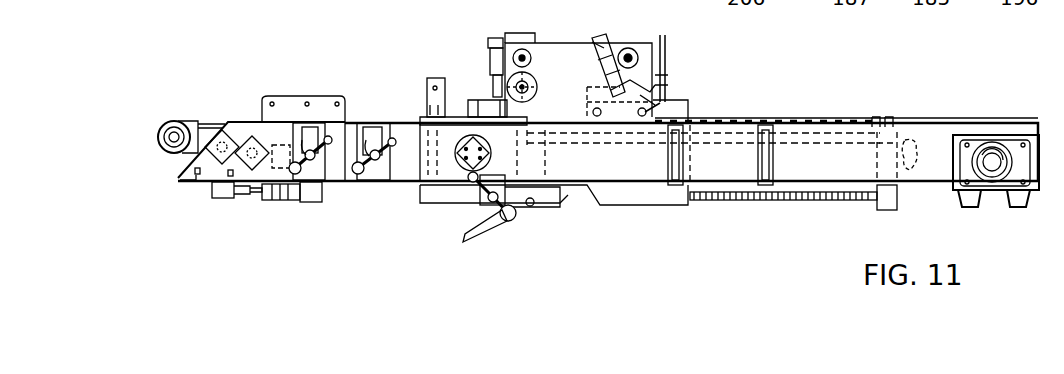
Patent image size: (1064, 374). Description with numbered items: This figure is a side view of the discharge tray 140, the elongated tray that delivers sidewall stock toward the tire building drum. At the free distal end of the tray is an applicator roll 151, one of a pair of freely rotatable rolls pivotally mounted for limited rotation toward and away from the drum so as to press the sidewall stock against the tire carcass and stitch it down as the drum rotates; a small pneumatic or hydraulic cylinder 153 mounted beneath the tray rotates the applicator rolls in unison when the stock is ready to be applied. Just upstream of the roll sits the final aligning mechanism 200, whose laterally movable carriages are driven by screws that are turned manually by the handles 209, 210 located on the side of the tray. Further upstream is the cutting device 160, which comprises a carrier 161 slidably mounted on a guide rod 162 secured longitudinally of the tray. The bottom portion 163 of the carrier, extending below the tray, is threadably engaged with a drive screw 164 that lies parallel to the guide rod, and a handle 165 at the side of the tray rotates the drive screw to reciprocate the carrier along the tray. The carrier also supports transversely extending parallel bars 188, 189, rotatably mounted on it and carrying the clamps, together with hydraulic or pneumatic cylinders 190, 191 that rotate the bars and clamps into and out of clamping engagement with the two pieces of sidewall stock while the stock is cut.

The discharge tray 140 is at (906, 113).
The applicator roll 151 is at (158, 135).
The pneumatic or hydraulic cylinder 153 is at (268, 202).
The cutting device 160 is at (652, 33).
The carrier 161 is at (556, 42).
The guide rod 162 is at (795, 122).
The bottom portion of carrier 163 is at (650, 198).
The drive screw 164 is at (788, 202).
The handle 165 is at (472, 200).
The bar 188 is at (490, 112).
The bar 189 is at (665, 100).
The hydraulic or pneumatic cylinder 190 is at (494, 62).
The hydraulic or pneumatic cylinder 191 is at (604, 36).
The final aligning mechanism 200 is at (288, 97).
The handle 209 is at (301, 182).
The handle 210 is at (366, 182).